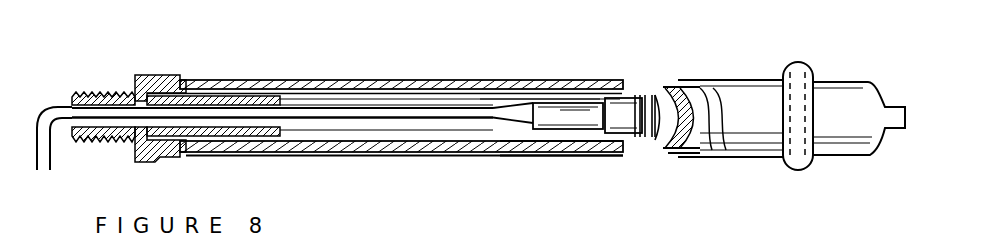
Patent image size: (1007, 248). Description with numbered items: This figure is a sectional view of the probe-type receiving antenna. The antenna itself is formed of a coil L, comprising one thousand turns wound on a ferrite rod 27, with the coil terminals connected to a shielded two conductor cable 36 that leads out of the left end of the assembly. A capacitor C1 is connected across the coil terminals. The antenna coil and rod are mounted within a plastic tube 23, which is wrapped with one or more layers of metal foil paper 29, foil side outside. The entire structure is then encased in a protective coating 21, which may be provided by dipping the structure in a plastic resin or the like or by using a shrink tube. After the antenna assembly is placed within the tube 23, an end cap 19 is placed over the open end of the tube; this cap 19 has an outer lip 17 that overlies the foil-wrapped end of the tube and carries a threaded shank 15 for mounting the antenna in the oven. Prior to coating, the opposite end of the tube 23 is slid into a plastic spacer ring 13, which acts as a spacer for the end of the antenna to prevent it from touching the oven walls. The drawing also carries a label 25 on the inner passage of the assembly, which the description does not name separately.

The plastic spacer ring 13 is at (786, 166).
The threaded shank 15 is at (108, 141).
The outer lip 17 is at (180, 78).
The end cap 19 is at (100, 92).
The protective coating 21 is at (743, 98).
The plastic tube 23 is at (700, 83).
The inner tube 25 is at (297, 115).
The ferrite rod 27 is at (604, 152).
The metal foil paper 29 is at (713, 110).
The shielded two conductor cable 36 is at (385, 133).
The capacitor C1 is at (525, 118).
The coil L is at (656, 138).